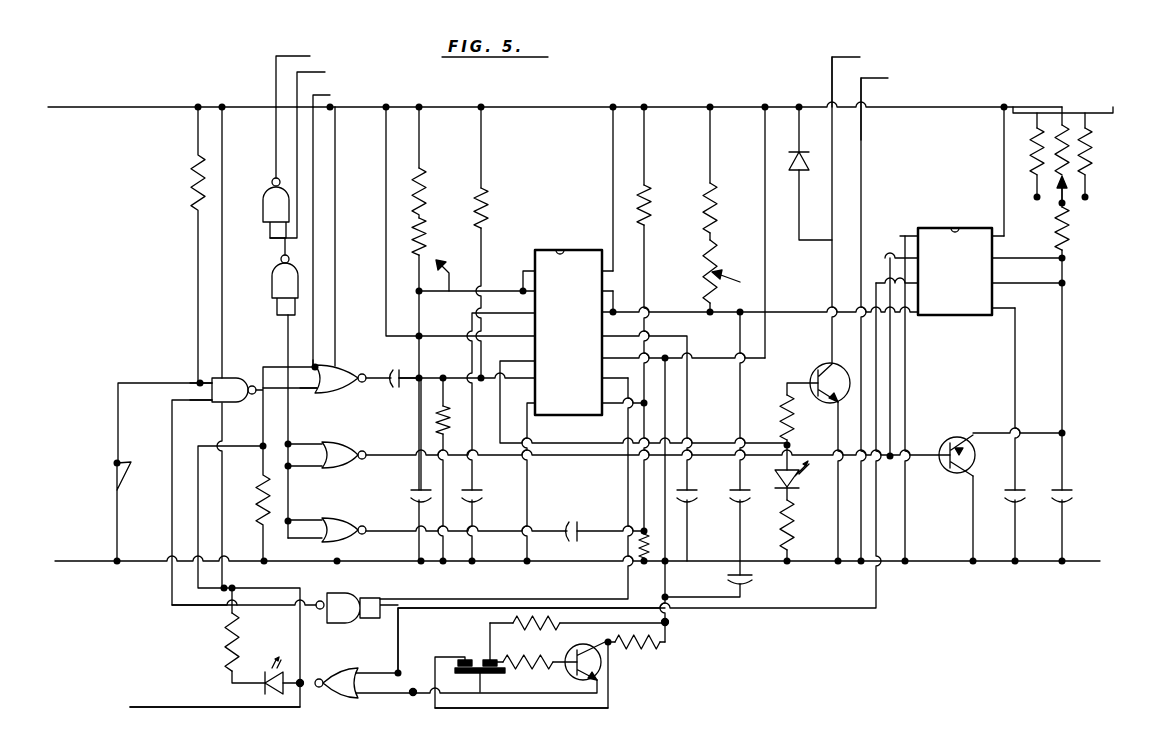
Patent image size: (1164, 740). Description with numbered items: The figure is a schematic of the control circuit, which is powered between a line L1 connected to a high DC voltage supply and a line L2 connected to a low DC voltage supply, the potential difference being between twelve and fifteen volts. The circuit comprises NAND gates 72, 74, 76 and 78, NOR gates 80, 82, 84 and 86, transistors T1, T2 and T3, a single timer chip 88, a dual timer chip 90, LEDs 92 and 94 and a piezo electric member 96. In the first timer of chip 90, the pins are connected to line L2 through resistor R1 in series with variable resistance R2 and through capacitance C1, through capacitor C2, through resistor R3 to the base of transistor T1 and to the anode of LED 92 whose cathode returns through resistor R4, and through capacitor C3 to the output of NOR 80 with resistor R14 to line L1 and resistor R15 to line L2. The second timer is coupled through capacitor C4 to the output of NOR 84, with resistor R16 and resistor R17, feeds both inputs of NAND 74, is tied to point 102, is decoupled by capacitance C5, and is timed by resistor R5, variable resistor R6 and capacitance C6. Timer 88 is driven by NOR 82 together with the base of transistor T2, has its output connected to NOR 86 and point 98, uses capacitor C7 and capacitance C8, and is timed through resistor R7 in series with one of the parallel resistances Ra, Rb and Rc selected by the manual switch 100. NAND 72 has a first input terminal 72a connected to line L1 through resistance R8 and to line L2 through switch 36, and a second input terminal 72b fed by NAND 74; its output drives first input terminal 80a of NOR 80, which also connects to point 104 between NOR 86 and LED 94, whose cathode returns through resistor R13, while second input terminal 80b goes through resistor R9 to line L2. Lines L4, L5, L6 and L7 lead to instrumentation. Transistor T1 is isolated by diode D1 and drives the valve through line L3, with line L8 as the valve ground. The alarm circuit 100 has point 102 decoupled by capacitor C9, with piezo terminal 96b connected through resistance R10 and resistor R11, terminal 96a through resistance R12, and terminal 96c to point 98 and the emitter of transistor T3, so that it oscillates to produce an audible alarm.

The line L1 is at (160, 106).
The line L2 is at (128, 563).
The line L3 is at (854, 58).
The line L4 is at (317, 101).
The line L5 is at (314, 76).
The line L6 is at (301, 56).
The line L7 is at (238, 708).
The line L8 is at (862, 128).
The resistor R1 is at (428, 183).
The variable potential resistance R2 is at (432, 244).
The resistor R3 is at (786, 416).
The resistor R4 is at (785, 522).
The resistor R5 is at (710, 218).
The variable potential resistor R6 is at (707, 283).
The resistor R7 is at (1075, 240).
The resistance R8 is at (193, 188).
The resistor R9 is at (263, 494).
The resistance R10 is at (537, 620).
The resistor R11 is at (503, 660).
The resistance R12 is at (640, 654).
The resistor R13 is at (232, 646).
The resistor R14 is at (488, 199).
The resistor R15 is at (446, 421).
The resistor R16 is at (650, 197).
The resistor R17 is at (638, 560).
The resistance Ra is at (1030, 162).
The resistance Rb is at (1066, 118).
The resistance Rc is at (1092, 174).
The capacitance C1 is at (414, 502).
The capacitor C2 is at (478, 502).
The capacitor C3 is at (400, 393).
The capacitor C4 is at (576, 528).
The capacitance C5 is at (690, 490).
The capacitance C6 is at (734, 498).
The capacitor C7 is at (1017, 486).
The capacitance C8 is at (1069, 497).
The capacitor C9 is at (728, 582).
The diode D1 is at (796, 149).
The transistor T1 is at (817, 368).
The transistor T2 is at (952, 440).
The transistor T3 is at (607, 672).
The switch 36 is at (110, 476).
The NAND gate 72 is at (232, 402).
The first input terminal 72a is at (200, 382).
The second input terminal 72b is at (217, 403).
The NAND gate 74 is at (345, 594).
The NAND gate 76 is at (272, 284).
The NAND gate 78 is at (264, 217).
The NOR gate 80 is at (362, 384).
The first input terminal 80a is at (316, 390).
The second input terminal 80b is at (320, 365).
The NOR gate 82 is at (348, 466).
The NOR gate 84 is at (348, 541).
The NOR gate 86 is at (337, 700).
The 555 timer chip 88 is at (937, 228).
The 556 dual timer chip 90 is at (545, 250).
The LED 92 is at (801, 489).
The LED 94 is at (258, 688).
The piezo electric member 96 is at (470, 657).
The terminal 96a is at (462, 658).
The terminal 96b is at (490, 658).
The terminal 96c is at (486, 675).
The point 98 is at (414, 696).
The alarm circuit 100 is at (584, 720).
The point 102 is at (668, 622).
The point 104 is at (301, 680).